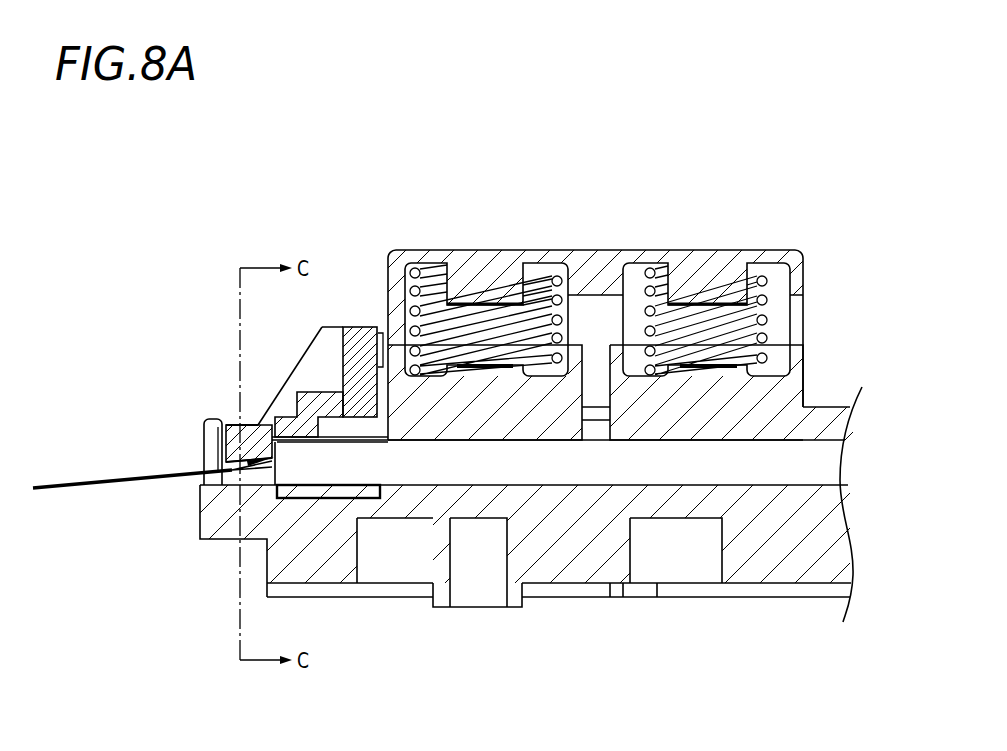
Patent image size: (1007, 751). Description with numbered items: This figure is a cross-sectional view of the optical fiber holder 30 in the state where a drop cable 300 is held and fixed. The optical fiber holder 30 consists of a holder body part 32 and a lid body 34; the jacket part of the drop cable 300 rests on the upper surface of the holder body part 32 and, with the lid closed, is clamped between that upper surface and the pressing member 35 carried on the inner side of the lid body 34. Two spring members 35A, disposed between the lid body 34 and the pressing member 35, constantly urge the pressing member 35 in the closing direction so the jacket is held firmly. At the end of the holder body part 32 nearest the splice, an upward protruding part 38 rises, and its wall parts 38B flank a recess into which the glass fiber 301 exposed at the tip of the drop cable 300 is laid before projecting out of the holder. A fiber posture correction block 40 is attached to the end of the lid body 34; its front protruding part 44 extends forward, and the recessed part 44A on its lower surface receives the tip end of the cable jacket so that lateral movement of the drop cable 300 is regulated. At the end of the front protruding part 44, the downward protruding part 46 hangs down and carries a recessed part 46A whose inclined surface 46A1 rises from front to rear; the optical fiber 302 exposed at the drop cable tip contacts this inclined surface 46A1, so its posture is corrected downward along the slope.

The optical fiber holder 30 is at (475, 224).
The holder body part 32 is at (580, 568).
The lid body 34 is at (614, 250).
The pressing member 35 is at (398, 425).
The spring members 35A is at (548, 266).
The upward protruding part 38 is at (195, 420).
The wall parts 38B is at (207, 444).
The fiber posture correction block 40 is at (368, 298).
The front protruding part 44 is at (308, 402).
The recessed part 44A is at (297, 498).
The downward protruding part 46 is at (243, 442).
The recessed part 46A is at (238, 424).
The inclined surface 46A1 is at (266, 466).
The drop cable 300 is at (805, 462).
The glass fiber 301 is at (75, 486).
The optical fiber 302 is at (230, 472).